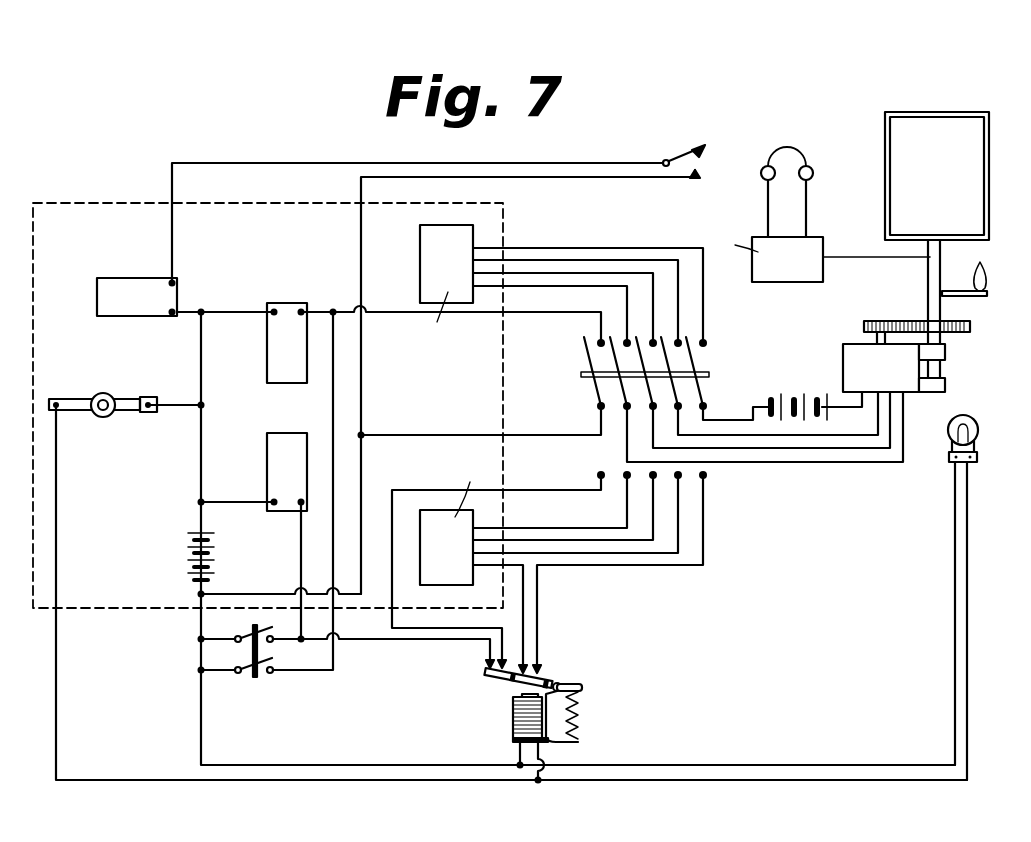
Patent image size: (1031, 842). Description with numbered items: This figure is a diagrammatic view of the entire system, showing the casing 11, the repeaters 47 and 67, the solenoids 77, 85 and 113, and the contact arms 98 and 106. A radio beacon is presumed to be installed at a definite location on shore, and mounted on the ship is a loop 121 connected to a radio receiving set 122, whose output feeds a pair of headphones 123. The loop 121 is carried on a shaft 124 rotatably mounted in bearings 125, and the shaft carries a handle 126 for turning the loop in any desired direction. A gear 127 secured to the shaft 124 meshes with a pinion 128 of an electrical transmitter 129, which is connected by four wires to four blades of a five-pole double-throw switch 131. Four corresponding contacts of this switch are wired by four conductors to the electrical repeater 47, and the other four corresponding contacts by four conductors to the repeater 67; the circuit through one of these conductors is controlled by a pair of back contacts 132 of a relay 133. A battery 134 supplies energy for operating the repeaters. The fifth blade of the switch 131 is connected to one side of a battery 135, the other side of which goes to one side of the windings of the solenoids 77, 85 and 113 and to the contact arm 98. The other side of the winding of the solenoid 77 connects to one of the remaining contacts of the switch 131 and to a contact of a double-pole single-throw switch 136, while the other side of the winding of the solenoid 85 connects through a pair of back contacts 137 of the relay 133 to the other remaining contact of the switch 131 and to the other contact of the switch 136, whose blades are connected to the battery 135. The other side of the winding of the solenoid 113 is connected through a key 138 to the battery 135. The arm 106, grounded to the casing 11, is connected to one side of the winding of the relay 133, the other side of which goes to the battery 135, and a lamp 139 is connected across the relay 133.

The casing 11 is at (65, 203).
The solenoid 113 is at (146, 278).
The solenoid 77 is at (266, 350).
The solenoid 85 is at (266, 446).
The contact arm 106 is at (78, 396).
The contact arm 98 is at (130, 413).
The battery 135 is at (186, 550).
The double-pole single-throw switch 136 is at (261, 681).
The electrical repeater 47 is at (426, 252).
The electrical repeater 67 is at (431, 530).
The five-pole double-throw switch 131 is at (710, 375).
The back contacts 132 is at (538, 663).
The back contacts 137 is at (500, 666).
The relay 133 is at (513, 716).
The key 138 is at (680, 148).
The headphones 123 is at (789, 150).
The loop 121 is at (884, 123).
The radio receiving set 122 is at (812, 277).
The handle 126 is at (987, 280).
The gear 127 is at (970, 331).
The pinion 128 is at (866, 322).
The shaft 124 is at (926, 295).
The electrical transmitter 129 is at (843, 363).
The battery 134 is at (799, 399).
The bearings 125 is at (958, 352).
The lamp 139 is at (950, 441).